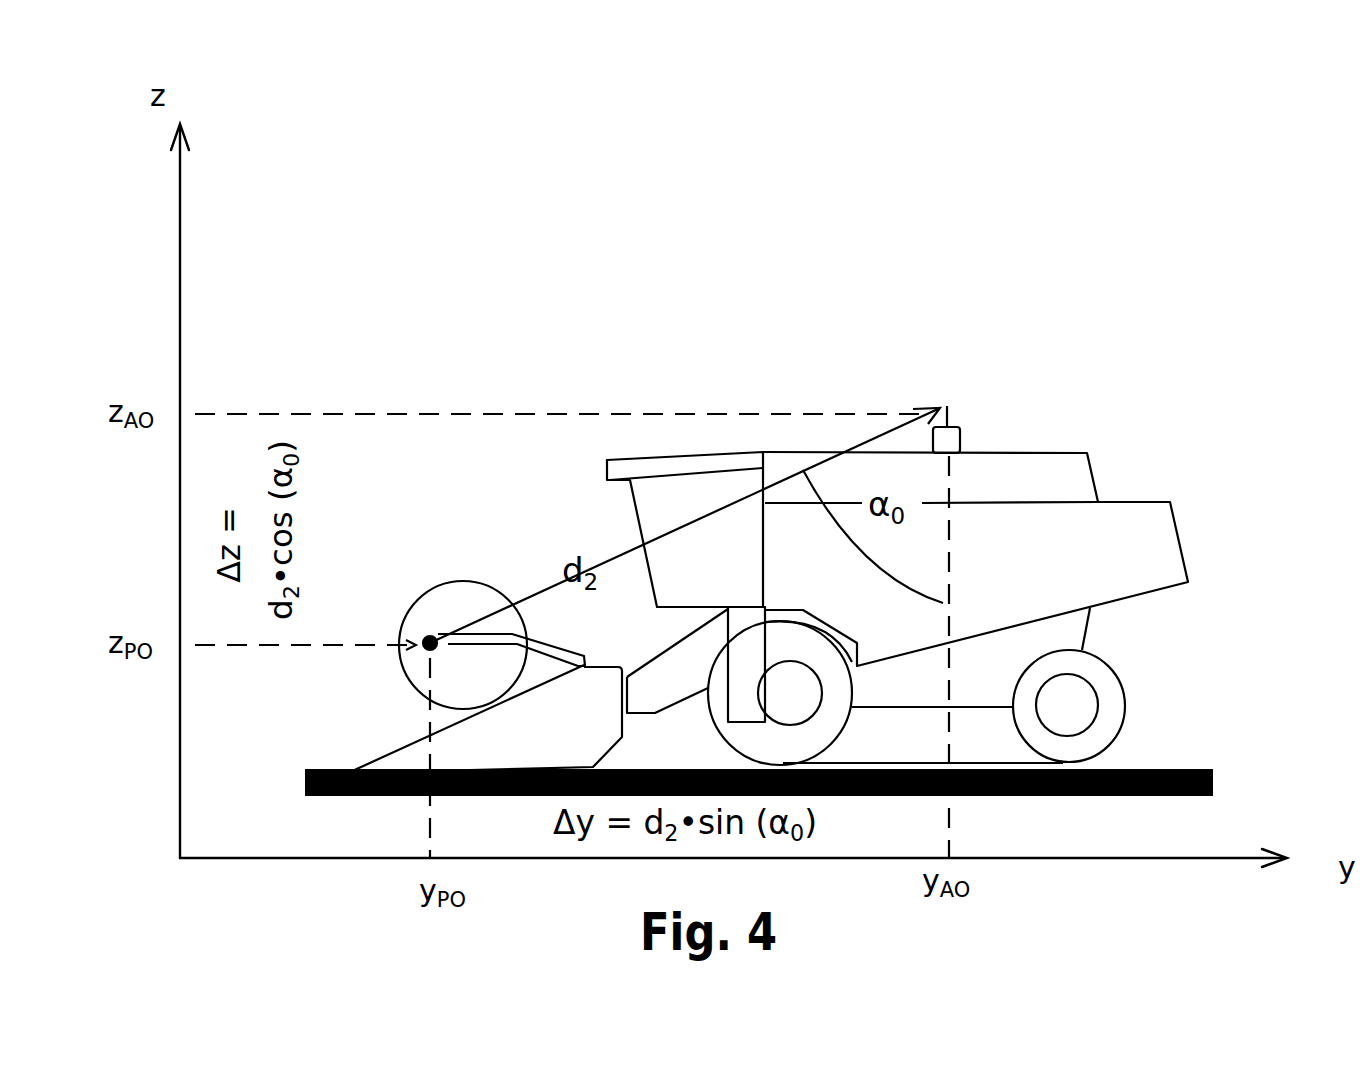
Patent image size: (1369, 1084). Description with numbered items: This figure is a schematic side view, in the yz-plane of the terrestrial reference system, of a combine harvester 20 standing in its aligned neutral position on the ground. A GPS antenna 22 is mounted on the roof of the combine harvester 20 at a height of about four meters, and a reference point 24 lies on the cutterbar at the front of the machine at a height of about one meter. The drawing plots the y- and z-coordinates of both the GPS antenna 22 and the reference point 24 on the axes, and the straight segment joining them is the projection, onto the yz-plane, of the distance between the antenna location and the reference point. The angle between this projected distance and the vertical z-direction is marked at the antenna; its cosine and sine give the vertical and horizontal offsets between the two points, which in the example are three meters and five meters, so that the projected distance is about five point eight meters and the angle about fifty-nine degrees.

The combine harvester 20 is at (1227, 505).
The GPS antenna 22 is at (950, 407).
The reference point 24 is at (429, 634).